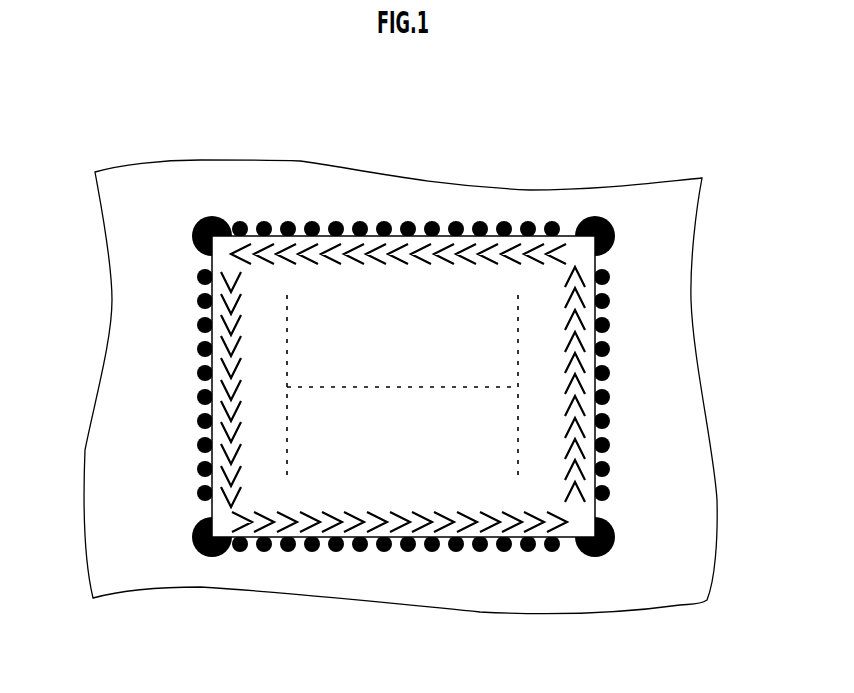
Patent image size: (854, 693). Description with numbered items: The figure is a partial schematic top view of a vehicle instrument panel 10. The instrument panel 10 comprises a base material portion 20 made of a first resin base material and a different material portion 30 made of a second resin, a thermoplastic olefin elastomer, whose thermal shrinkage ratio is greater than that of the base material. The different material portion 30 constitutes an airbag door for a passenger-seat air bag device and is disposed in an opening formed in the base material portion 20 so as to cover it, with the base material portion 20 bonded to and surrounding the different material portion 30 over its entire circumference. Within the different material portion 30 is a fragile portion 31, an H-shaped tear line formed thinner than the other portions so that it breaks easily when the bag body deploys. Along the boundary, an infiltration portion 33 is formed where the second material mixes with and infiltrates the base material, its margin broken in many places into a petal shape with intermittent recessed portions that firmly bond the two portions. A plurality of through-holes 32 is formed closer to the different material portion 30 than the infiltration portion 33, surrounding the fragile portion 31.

The instrument panel 10 is at (416, 387).
The base material portion 20 is at (677, 347).
The different material portion 30 is at (465, 453).
The fragile portion 31 is at (417, 387).
The through-holes 32 is at (381, 540).
The infiltration portion 33 is at (608, 290).